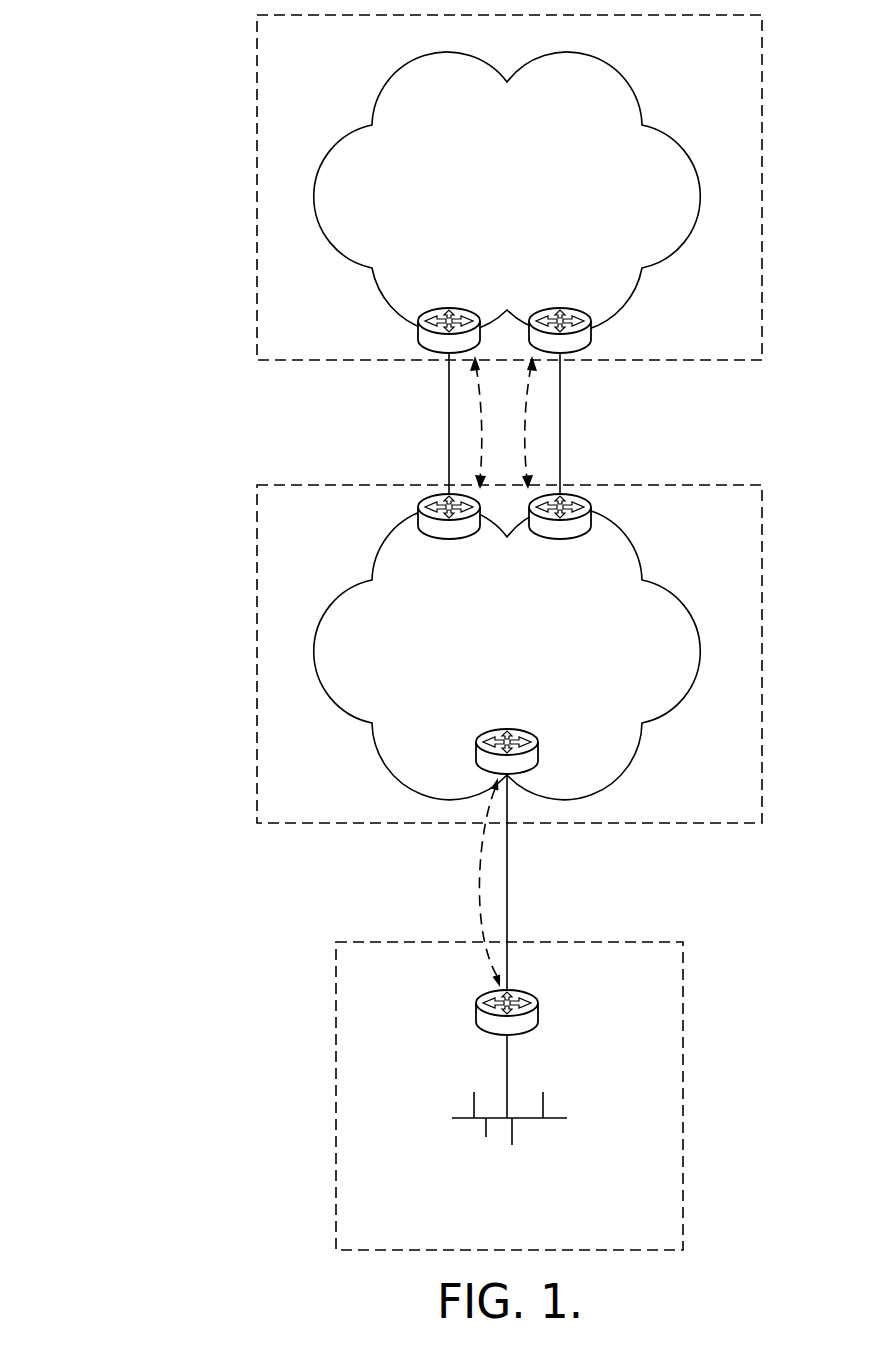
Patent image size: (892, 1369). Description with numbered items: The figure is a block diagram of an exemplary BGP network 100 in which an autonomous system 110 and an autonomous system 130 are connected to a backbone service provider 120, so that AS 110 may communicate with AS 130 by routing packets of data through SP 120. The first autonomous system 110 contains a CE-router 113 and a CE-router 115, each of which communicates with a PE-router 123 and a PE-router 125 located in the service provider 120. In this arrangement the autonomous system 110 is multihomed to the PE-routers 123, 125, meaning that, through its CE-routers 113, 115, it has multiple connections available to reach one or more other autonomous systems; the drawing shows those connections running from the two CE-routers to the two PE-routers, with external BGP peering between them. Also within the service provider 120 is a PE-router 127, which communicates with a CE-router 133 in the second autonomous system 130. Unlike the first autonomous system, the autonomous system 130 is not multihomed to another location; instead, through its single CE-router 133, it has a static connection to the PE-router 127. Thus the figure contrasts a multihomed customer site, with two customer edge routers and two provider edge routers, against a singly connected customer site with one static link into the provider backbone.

The network system 100 is at (140, 269).
The autonomous system 110 is at (257, 152).
The CE-router 113 is at (430, 353).
The CE-router 115 is at (576, 353).
The backbone service provider 120 is at (257, 645).
The PE-router 123 is at (432, 497).
The PE-router 125 is at (577, 497).
The PE-router 127 is at (532, 765).
The autonomous system 130 is at (335, 1088).
The CE-router 133 is at (540, 1012).